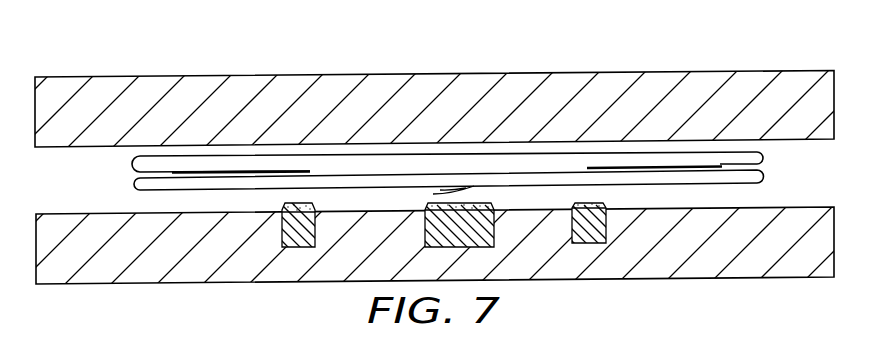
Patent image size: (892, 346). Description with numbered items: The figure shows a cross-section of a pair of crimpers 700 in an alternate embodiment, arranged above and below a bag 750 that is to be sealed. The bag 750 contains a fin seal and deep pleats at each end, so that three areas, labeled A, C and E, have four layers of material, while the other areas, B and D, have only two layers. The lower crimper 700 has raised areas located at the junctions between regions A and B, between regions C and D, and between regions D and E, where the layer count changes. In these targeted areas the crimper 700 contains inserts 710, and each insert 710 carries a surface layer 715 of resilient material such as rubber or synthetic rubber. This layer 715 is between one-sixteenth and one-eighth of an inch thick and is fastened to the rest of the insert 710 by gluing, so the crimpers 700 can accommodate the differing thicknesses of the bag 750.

The crimper 700 is at (90, 80).
The insert 710 is at (606, 218).
The surface layer 715 is at (310, 206).
The bag 750 is at (767, 172).